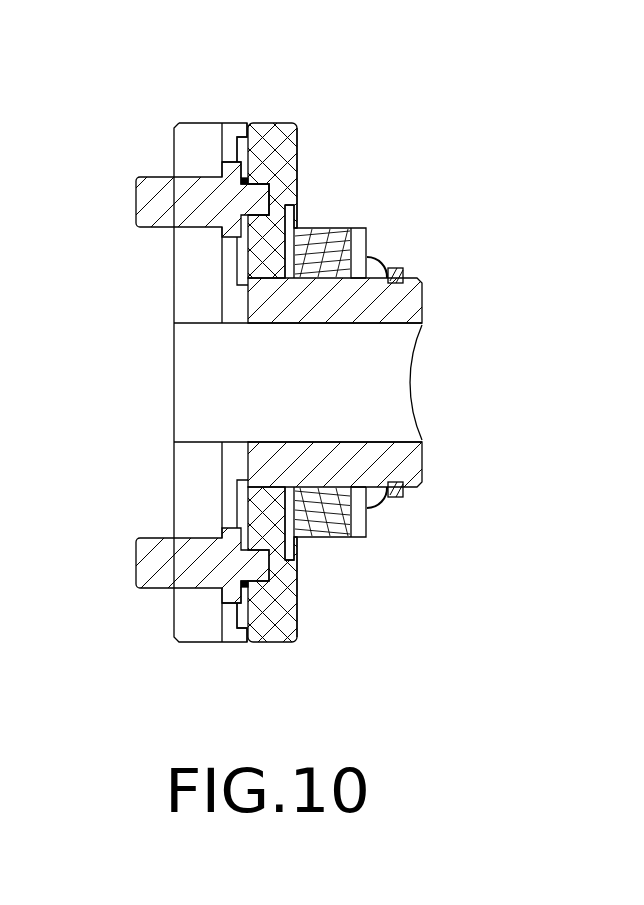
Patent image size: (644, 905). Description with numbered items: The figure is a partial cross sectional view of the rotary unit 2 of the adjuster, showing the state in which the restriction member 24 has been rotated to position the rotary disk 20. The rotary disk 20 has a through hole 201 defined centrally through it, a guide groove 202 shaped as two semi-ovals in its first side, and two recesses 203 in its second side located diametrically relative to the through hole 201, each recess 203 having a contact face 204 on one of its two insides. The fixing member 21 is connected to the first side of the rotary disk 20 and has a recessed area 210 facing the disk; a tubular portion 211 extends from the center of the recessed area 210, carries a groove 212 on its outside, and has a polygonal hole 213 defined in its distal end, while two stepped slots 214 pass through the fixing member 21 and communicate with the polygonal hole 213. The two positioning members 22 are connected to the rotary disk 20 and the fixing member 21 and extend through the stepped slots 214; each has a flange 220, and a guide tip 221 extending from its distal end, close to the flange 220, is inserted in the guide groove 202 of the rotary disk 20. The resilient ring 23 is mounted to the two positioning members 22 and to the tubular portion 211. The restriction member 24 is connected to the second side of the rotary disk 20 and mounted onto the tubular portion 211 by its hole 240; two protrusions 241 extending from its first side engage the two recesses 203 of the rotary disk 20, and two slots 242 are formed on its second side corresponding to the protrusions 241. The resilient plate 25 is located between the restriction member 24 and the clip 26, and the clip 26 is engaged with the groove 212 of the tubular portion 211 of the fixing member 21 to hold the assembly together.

The rotary unit 2 is at (496, 232).
The rotary disk 20 is at (345, 404).
The through hole 201 is at (300, 617).
The guide groove 202 is at (258, 200).
The recess 203 is at (298, 192).
The contact face 204 is at (294, 218).
The fixing member 21 is at (288, 395).
The recessed area 210 is at (238, 151).
The tubular portion 211 is at (405, 302).
The groove 212 is at (412, 470).
The polygonal hole 213 is at (193, 385).
The stepped slot 214 is at (188, 495).
The positioning member 22 is at (215, 405).
The flange 220 is at (230, 172).
The guide tip 221 is at (287, 205).
The resilient ring 23 is at (246, 179).
The restriction member 24 is at (386, 425).
The hole 240 is at (343, 537).
The protrusion 241 is at (370, 227).
The slot 242 is at (375, 257).
The resilient plate 25 is at (368, 492).
The clip 26 is at (402, 497).